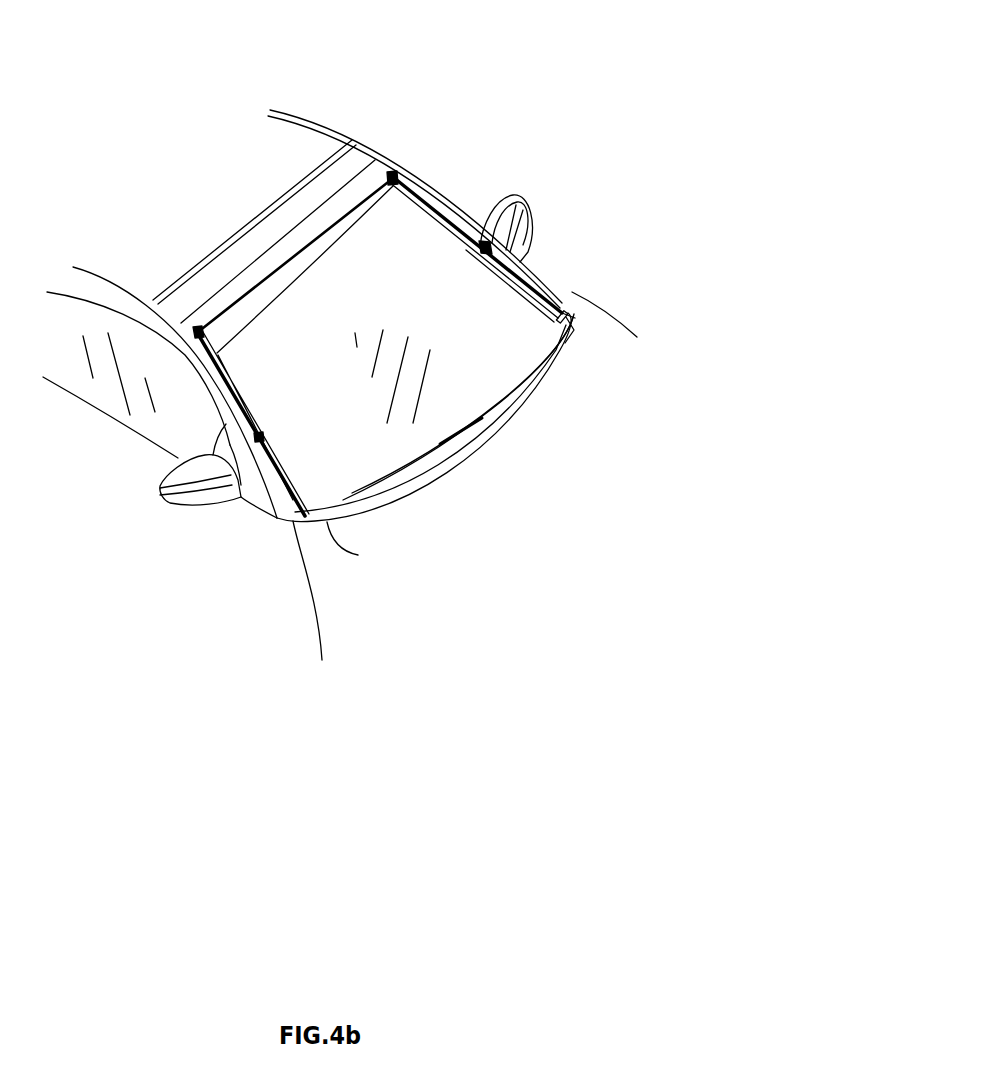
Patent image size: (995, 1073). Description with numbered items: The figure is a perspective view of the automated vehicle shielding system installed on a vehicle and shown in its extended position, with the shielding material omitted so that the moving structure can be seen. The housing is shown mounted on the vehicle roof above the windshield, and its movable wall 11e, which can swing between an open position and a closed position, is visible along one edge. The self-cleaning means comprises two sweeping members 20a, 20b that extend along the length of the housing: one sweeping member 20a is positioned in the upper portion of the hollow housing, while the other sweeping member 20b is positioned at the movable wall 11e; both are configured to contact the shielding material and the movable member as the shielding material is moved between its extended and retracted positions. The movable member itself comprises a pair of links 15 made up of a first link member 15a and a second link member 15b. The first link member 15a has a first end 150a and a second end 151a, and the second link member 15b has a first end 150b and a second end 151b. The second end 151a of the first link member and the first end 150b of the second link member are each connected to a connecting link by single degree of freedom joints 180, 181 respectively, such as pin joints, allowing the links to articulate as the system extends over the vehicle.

The pair of links 15 is at (443, 196).
The first link member 15a is at (433, 190).
The second link member 15b is at (557, 287).
The sweeping member 20a is at (394, 173).
The sweeping member 20b is at (328, 160).
The movable wall 11e is at (356, 172).
The first end of the first link member 150a is at (392, 160).
The first end of the second link member 150b is at (528, 258).
The second end of the first link member 151a is at (487, 240).
The second end of the second link member 151b is at (563, 317).
The single degree of freedom joint 180 is at (483, 242).
The single degree of freedom joint 181 is at (537, 265).